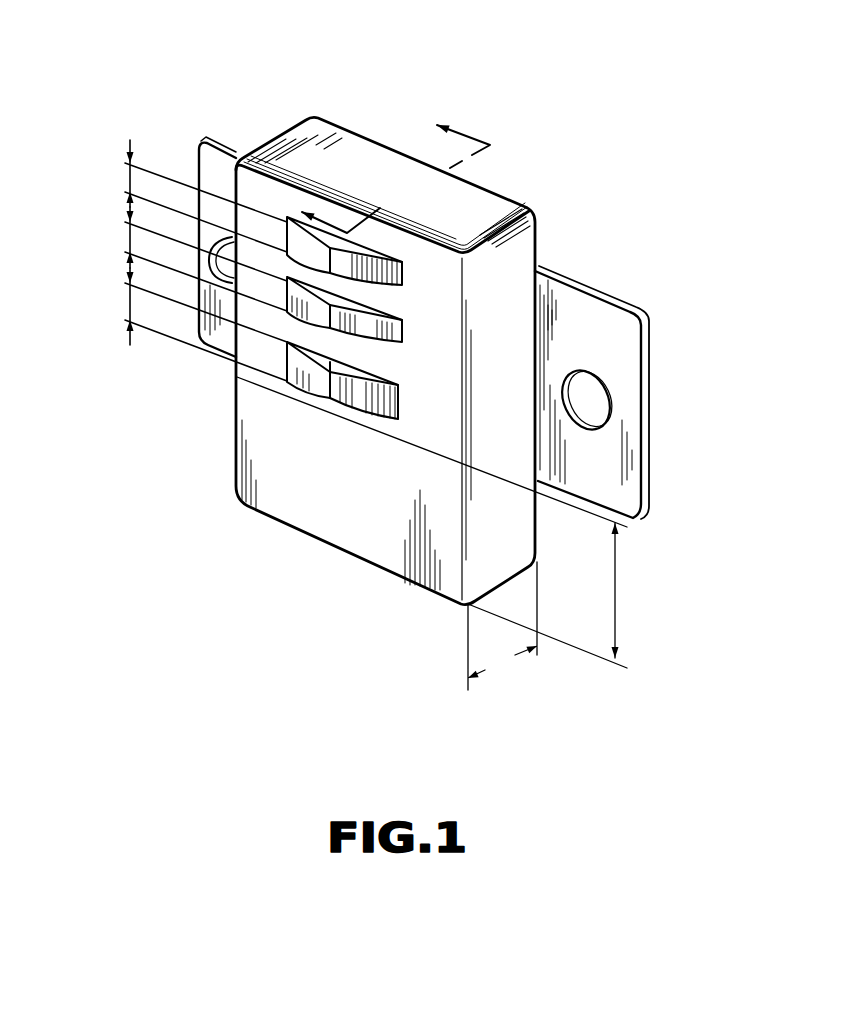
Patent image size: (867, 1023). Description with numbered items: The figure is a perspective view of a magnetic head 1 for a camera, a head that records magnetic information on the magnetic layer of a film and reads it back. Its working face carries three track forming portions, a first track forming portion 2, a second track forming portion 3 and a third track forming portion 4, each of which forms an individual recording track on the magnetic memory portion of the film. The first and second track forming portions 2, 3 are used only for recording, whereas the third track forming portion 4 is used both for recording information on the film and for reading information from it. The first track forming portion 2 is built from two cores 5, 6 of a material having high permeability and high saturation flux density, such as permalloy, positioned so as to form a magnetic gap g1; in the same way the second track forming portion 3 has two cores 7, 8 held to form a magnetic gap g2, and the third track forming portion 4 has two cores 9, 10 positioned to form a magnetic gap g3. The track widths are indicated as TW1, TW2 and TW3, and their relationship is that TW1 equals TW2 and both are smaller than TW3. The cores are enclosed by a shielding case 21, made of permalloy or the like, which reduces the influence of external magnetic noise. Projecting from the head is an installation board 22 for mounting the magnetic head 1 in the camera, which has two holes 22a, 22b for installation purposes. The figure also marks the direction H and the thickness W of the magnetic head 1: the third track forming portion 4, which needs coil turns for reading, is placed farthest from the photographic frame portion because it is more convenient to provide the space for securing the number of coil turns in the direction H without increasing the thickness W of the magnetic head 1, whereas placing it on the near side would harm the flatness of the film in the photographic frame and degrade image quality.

The magnetic head 1 is at (487, 127).
The first track forming portion 2 is at (367, 68).
The second track forming portion 3 is at (592, 180).
The third track forming portion 4 is at (345, 573).
The core 5 is at (288, 254).
The core 6 is at (358, 270).
The core 7 is at (300, 308).
The core 8 is at (335, 317).
The core 9 is at (322, 390).
The core 10 is at (377, 407).
The shielding case 21 is at (475, 207).
The installation board 22 is at (597, 317).
The hole 22a is at (222, 200).
The hole 22b is at (590, 404).
The magnetic gap g1 is at (343, 198).
The magnetic gap g2 is at (330, 302).
The magnetic gap g3 is at (330, 384).
The width of first track forming portion TW1 is at (167, 196).
The width of second track forming portion TW2 is at (168, 259).
The width of third track forming portion TW3 is at (171, 324).
The direction H is at (547, 595).
The thickness of magnetic head W is at (502, 626).